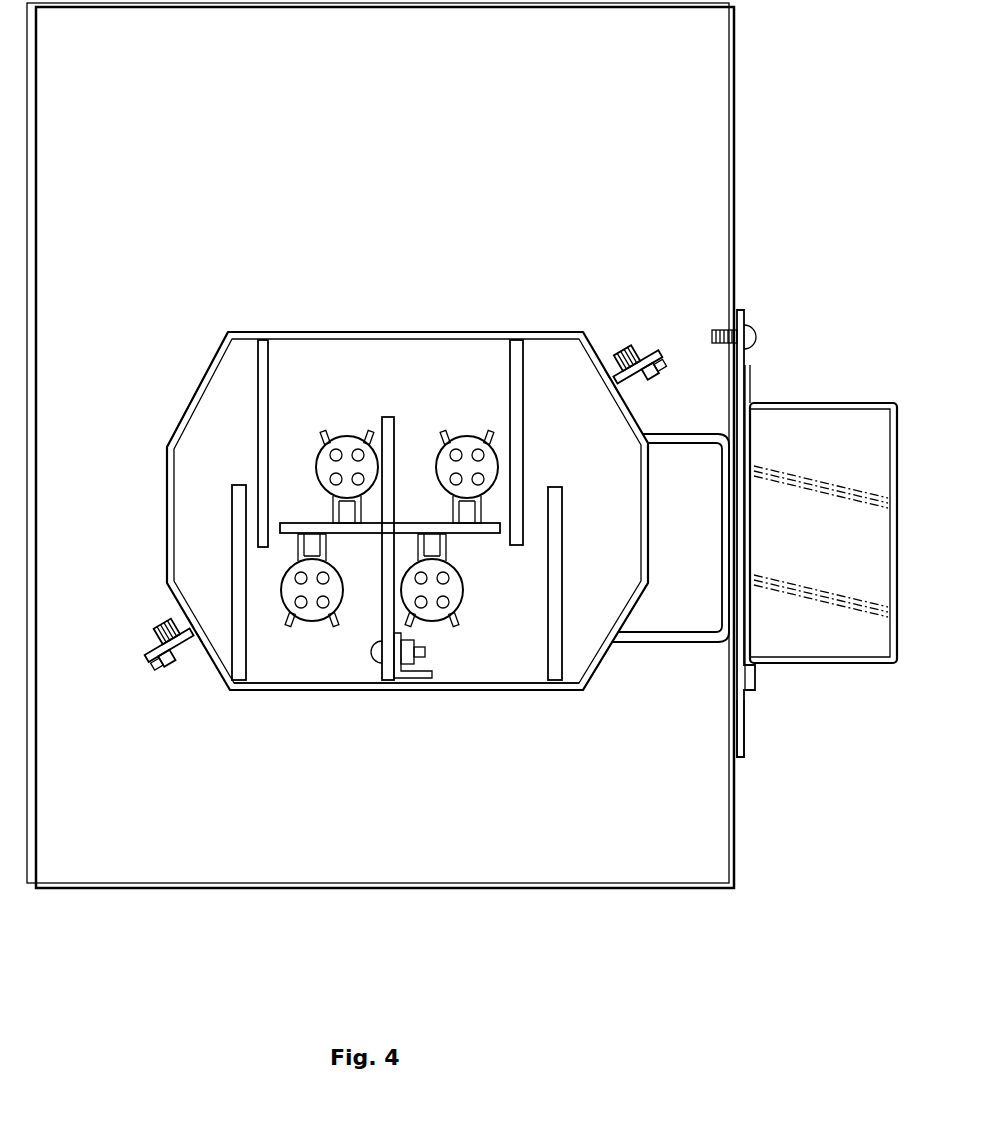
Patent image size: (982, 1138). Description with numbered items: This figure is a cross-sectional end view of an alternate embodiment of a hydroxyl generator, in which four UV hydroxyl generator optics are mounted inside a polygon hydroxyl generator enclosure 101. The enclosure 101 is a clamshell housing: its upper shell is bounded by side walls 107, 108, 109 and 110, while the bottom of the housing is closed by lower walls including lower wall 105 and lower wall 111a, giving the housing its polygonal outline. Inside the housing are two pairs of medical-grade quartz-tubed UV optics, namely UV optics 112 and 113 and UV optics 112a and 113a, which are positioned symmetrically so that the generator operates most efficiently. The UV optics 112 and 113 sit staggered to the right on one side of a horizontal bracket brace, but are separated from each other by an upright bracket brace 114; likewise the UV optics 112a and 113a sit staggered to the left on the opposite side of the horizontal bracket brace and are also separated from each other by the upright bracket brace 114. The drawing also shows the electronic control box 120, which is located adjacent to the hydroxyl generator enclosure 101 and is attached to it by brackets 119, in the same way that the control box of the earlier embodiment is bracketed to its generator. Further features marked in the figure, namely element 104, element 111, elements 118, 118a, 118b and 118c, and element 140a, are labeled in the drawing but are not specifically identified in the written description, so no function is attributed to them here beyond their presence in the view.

The polygon hydroxyl generator enclosure 101 is at (173, 246).
The housing 104 is at (510, 683).
The lower wall 105 is at (362, 690).
The side wall 107 is at (601, 338).
The side wall 108 is at (646, 525).
The side wall 109 is at (193, 401).
The side wall 110 is at (166, 515).
The fastener 111 is at (208, 670).
The lower wall 111a is at (632, 613).
The UV optic 112 is at (348, 436).
The UV optic 112a is at (312, 624).
The UV optic 113 is at (468, 433).
The UV optic 113a is at (464, 594).
The upright bracket brace 114 is at (388, 418).
The guide plate 118 is at (557, 662).
The guide plate 118a is at (513, 350).
The guide plate 118b is at (266, 352).
The guide plate 118c is at (242, 664).
The brackets 119 is at (690, 440).
The electronic control box 120 is at (838, 402).
The bracket flange 140a is at (748, 722).